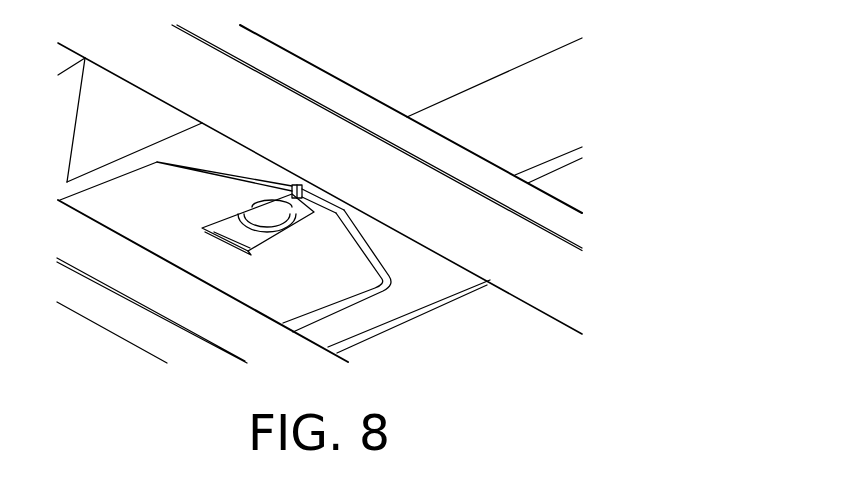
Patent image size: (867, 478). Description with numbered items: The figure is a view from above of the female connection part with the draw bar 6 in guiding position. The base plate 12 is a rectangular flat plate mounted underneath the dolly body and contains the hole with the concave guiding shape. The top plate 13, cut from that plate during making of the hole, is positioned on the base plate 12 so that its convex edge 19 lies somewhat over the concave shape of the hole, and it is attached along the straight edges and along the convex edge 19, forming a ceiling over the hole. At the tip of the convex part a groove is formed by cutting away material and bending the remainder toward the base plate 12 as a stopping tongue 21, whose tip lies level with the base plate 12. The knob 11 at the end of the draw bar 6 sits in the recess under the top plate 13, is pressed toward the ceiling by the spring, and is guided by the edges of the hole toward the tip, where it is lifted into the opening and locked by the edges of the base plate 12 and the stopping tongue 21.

The draw bar 6 is at (485, 90).
The knob 11 is at (296, 213).
The base plate 12 is at (448, 300).
The top plate 13 is at (113, 190).
The convex edge 19 is at (377, 247).
The stopping tongue 21 is at (250, 232).